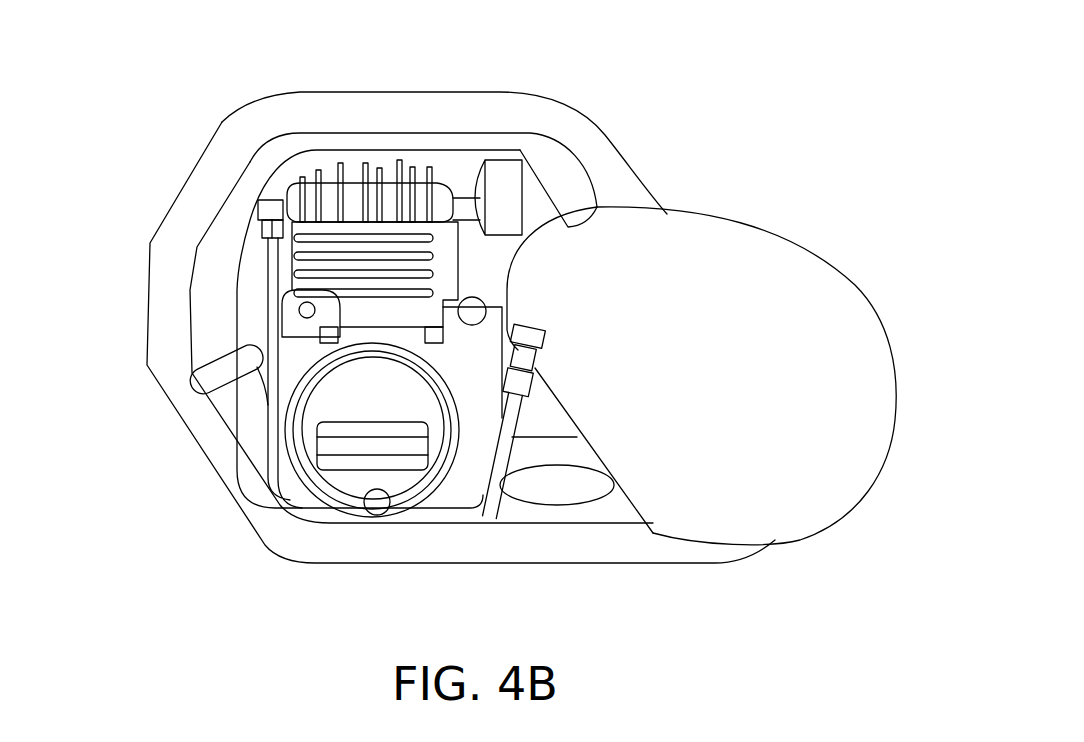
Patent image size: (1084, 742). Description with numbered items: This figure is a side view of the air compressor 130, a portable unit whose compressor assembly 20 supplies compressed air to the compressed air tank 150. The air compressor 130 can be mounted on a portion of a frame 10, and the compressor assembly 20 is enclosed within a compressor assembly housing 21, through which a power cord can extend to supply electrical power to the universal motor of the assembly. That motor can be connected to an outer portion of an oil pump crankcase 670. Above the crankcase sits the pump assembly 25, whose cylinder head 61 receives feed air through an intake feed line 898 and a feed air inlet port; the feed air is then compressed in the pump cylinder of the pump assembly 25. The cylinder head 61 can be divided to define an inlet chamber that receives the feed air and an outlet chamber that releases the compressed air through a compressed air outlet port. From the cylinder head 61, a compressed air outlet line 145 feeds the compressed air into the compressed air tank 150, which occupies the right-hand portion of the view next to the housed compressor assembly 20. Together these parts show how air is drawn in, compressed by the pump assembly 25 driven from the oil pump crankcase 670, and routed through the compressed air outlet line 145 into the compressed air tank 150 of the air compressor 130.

The frame 10 is at (212, 175).
The compressor assembly 20 is at (248, 175).
The cylinder head 61 is at (274, 156).
The air compressor 130 is at (612, 83).
The intake feed line 898 is at (467, 205).
The compressed air tank 150 is at (862, 327).
The pump assembly 25 is at (250, 254).
The compressed air outlet line 145 is at (273, 302).
The compressor assembly housing 21 is at (481, 348).
The oil pump crankcase 670 is at (487, 453).